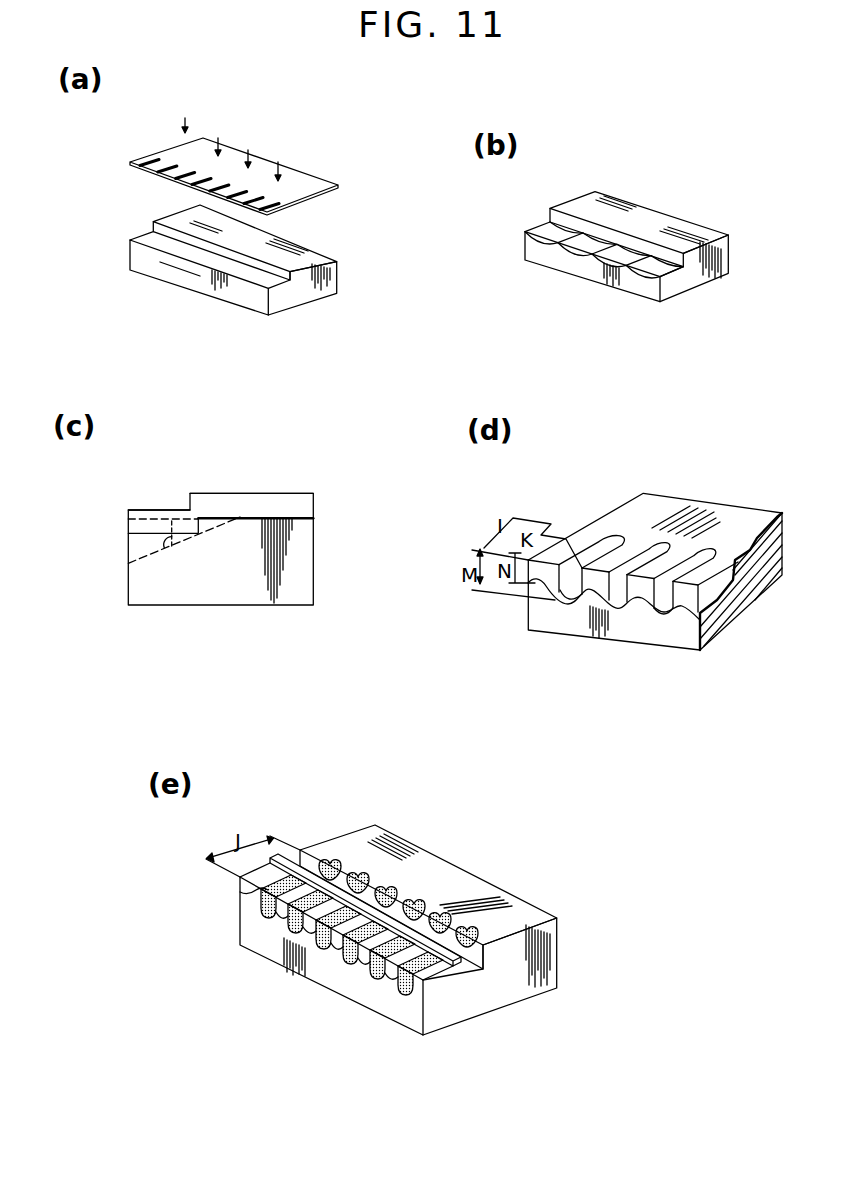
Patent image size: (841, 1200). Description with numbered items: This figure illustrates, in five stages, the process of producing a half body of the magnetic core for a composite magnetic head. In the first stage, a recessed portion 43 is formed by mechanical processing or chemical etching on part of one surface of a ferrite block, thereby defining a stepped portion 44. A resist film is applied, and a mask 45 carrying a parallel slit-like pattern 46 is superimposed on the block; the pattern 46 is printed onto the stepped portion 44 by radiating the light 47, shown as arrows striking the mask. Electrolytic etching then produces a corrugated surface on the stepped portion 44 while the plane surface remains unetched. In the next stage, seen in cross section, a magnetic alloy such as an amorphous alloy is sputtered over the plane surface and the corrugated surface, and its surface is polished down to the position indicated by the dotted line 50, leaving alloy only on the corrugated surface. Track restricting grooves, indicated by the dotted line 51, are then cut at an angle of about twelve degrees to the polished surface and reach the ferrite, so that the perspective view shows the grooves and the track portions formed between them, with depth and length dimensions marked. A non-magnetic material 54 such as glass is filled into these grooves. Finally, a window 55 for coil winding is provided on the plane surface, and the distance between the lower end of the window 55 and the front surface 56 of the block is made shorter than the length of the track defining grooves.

The recessed portion 43 is at (152, 226).
The stepped portion 44 is at (203, 260).
The mask 45 is at (313, 183).
The parallel slit-like pattern 46 is at (172, 160).
The light 47 is at (186, 118).
The dotted line 50 is at (159, 517).
The dotted line 51 is at (147, 556).
The non-magnetic material 54 is at (362, 906).
The window 55 is at (482, 967).
The front surface 56 is at (245, 913).